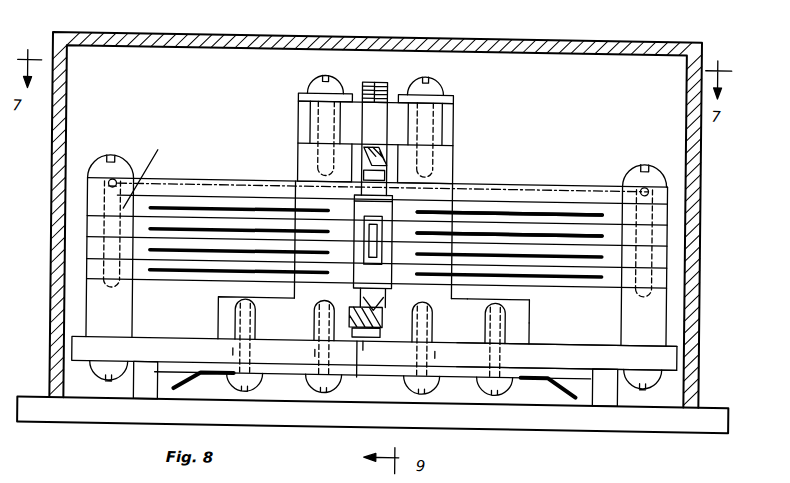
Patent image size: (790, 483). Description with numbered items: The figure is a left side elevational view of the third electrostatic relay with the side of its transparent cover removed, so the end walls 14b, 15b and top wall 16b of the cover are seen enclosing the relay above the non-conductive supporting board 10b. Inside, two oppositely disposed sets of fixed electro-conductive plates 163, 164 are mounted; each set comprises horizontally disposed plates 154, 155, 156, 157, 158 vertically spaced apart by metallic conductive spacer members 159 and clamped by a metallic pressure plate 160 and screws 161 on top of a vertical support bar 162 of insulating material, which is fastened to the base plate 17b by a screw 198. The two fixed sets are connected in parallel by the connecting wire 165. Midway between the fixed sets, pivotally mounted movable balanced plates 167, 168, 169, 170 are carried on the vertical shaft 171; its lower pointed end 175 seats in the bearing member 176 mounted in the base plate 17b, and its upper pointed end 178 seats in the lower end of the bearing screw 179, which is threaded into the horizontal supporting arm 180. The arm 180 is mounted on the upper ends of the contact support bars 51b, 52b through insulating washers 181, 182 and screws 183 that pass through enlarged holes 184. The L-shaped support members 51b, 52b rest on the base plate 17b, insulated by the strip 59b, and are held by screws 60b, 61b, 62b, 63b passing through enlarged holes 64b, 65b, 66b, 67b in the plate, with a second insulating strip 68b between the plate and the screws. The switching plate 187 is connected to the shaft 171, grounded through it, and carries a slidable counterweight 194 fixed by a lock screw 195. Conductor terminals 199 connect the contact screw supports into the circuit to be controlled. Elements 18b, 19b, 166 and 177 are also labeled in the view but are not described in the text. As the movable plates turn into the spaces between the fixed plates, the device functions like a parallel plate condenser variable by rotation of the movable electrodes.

The supporting board 10b is at (101, 418).
The end wall 14b is at (56, 163).
The end wall 15b is at (700, 191).
The top wall 16b is at (315, 29).
The base plate 17b is at (161, 339).
The support post 18b is at (159, 393).
The support post 19b is at (604, 388).
The contact screw supporting member 51b is at (221, 297).
The contact screw supporting member 52b is at (535, 296).
The strip of insulating material 59b is at (536, 328).
The screw 60b is at (489, 391).
The screw 61b is at (414, 377).
The screw 62b is at (314, 393).
The screw 63b is at (232, 394).
The enlarged hole 64b is at (439, 374).
The enlarged hole 65b is at (443, 352).
The enlarged hole 66b is at (313, 354).
The enlarged hole 67b is at (231, 355).
The second strip of insulating material 68b is at (533, 354).
The fixed electroconductive plate 154 is at (669, 195).
The fixed electroconductive plate 155 is at (669, 215).
The fixed electroconductive plate 156 is at (669, 236).
The fixed electroconductive plate 157 is at (669, 258).
The fixed electroconductive plate 158 is at (669, 278).
The spacer member 159 is at (612, 177).
The pressure plate 160 is at (656, 158).
The screw 161 is at (621, 171).
The vertical support bar 162 is at (671, 308).
The set of fixed electro-conductive plates 163 is at (207, 190).
The set of fixed electro-conductive plates 164 is at (554, 190).
The connecting wire 165 is at (287, 178).
The pivot 166 is at (117, 181).
The movable balanced electrode plate 167 is at (474, 210).
The movable balanced electrode plate 168 is at (480, 223).
The movable balanced electrode plate 169 is at (466, 288).
The movable balanced electrode plate 170 is at (530, 292).
The vertical shaft 171 is at (365, 291).
The pointed end 175 is at (388, 304).
The bearing member 176 is at (353, 313).
The center terminal 177 is at (337, 375).
The pointed end 178 is at (394, 193).
The bearing screw 179 is at (376, 77).
The horizontal supporting arm 180 is at (455, 118).
The insulating washer 181 is at (456, 138).
The insulating washer 182 is at (455, 97).
The screw 183 is at (432, 77).
The enlarged hole 184 is at (437, 108).
The switching plate 187 is at (368, 238).
The counterweight 194 is at (368, 212).
The lock screw 195 is at (385, 240).
The screw 198 is at (649, 378).
The conductor terminal 199 is at (559, 380).